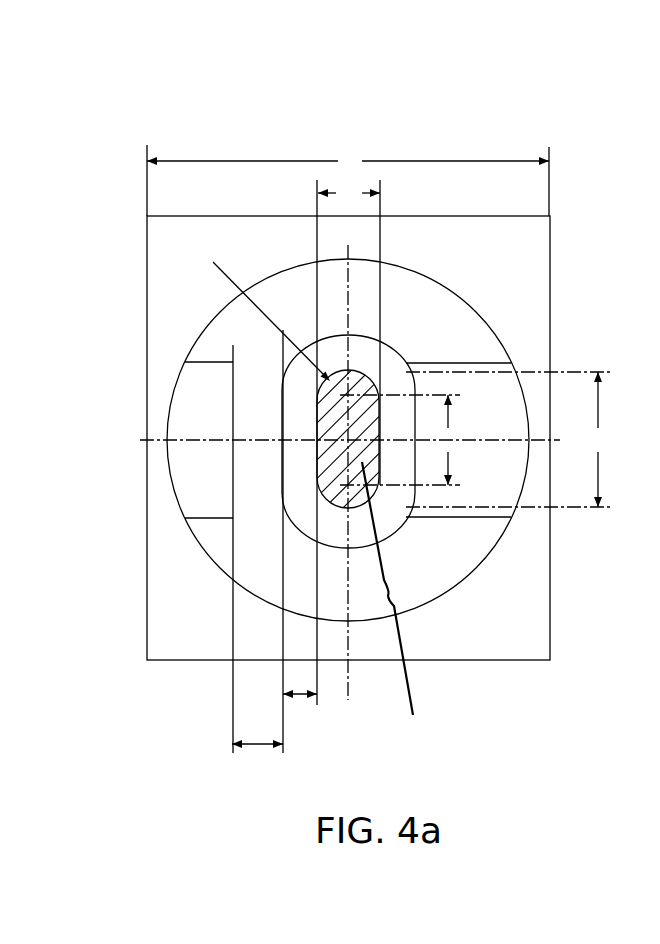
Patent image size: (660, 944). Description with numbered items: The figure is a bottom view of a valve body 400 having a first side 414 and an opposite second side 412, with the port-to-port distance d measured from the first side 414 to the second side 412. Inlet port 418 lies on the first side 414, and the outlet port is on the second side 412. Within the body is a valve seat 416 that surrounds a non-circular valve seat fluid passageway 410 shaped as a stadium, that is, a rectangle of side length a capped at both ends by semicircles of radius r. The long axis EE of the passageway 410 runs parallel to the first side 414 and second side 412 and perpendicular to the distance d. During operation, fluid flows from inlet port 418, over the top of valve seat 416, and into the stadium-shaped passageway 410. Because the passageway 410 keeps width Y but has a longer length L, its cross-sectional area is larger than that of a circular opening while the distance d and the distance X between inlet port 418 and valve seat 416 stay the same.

The valve body 400 is at (452, 118).
The non-circular valve seat fluid passageway 410 is at (316, 398).
The second side 412 is at (550, 595).
The first side 414 is at (146, 602).
The valve seat 416 is at (393, 352).
The inlet port 418 is at (235, 483).